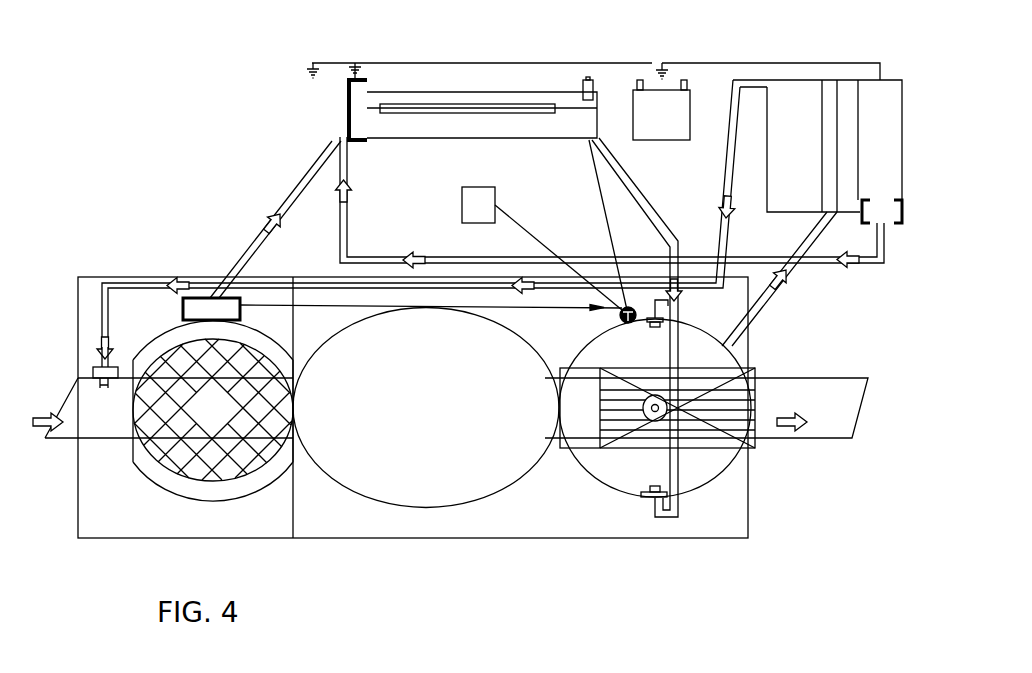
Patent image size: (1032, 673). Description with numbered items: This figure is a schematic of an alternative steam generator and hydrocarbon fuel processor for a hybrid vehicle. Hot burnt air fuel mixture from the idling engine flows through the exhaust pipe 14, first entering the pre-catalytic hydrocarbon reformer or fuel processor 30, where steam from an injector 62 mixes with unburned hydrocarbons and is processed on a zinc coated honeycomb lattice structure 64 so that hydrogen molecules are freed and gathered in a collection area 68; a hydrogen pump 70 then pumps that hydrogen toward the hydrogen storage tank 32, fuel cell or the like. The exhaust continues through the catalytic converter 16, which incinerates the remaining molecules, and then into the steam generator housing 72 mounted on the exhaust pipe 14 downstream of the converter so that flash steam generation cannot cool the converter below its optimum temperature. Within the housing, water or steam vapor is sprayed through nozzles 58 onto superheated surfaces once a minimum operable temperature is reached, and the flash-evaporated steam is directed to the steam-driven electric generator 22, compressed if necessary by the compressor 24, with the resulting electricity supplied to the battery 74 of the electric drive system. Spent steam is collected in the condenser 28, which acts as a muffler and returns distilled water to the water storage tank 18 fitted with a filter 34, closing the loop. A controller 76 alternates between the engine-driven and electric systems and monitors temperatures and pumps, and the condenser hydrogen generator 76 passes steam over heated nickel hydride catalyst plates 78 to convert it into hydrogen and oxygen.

The exhaust pipe 14 is at (97, 436).
The catalytic converter 16 is at (390, 492).
The water storage tank 18 is at (430, 105).
The steam-driven electric generator 22 is at (872, 95).
The compressor 24 is at (827, 103).
The condenser 28 is at (885, 223).
The fuel processor 30 is at (255, 507).
The hydrogen storage tank 32 is at (347, 113).
The filter 34 is at (583, 88).
The nozzles 58 is at (637, 318).
The injector 62 is at (95, 369).
The honeycomb lattice structure 64 is at (180, 448).
The collection area 68 is at (152, 343).
The hydrogen pump 70 is at (195, 305).
The steam generator housing 72 is at (697, 507).
The battery 74 is at (638, 98).
The controller 76 is at (465, 208).
The nickel hydride catalyst plates 78 is at (697, 440).